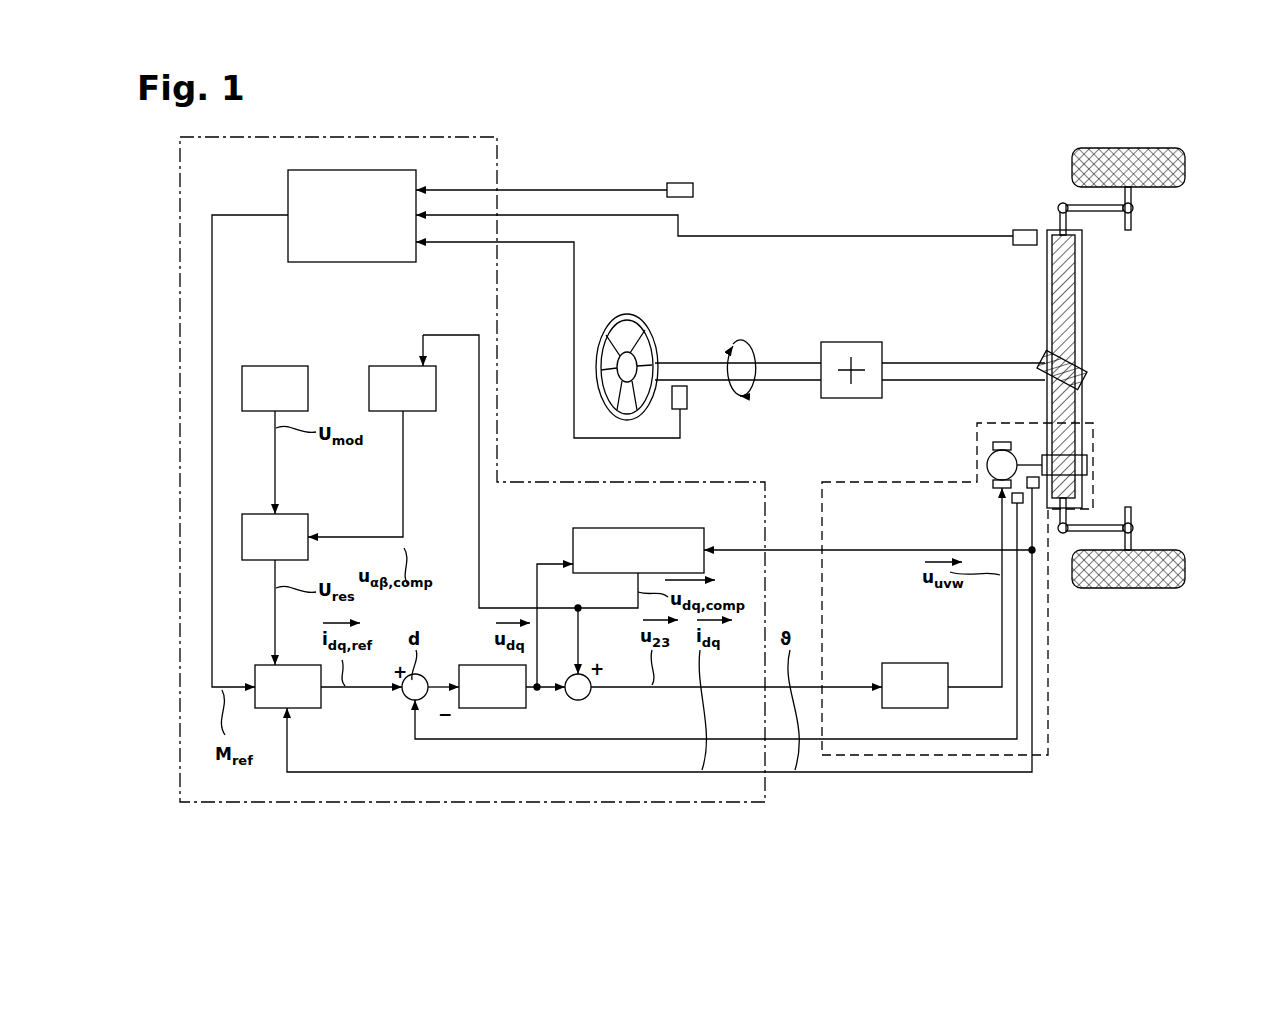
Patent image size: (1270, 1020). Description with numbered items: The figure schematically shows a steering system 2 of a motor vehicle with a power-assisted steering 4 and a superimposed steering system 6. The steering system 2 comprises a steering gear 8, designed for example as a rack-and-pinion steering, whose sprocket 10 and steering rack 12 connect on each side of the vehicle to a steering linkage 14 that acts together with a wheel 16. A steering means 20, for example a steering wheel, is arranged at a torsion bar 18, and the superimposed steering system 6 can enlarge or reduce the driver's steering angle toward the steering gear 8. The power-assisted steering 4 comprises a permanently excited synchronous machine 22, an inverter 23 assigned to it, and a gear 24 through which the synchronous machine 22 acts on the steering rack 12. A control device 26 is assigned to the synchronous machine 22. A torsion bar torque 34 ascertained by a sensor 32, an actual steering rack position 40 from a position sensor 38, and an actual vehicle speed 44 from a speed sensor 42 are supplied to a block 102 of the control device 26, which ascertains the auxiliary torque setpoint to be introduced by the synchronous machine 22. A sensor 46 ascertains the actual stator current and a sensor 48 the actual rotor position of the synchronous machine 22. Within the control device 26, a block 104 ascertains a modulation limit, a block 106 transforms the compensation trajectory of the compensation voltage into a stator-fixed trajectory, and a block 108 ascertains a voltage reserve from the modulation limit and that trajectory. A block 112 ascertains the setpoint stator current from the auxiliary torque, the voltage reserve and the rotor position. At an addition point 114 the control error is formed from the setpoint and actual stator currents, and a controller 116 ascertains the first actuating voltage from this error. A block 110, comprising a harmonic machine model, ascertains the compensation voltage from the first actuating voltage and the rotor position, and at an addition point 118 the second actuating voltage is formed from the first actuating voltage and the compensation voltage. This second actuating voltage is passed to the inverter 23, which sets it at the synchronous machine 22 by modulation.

The steering system 2 is at (800, 180).
The power-assisted steering 4 is at (975, 432).
The superimposed steering system 6 is at (850, 341).
The steering gear 8 is at (1035, 345).
The sprocket 10 is at (1080, 372).
The steering rack 12 is at (1062, 252).
The steering linkage 14 is at (1080, 206).
The wheel 16 is at (1185, 168).
The torsion bar 18 is at (708, 362).
The steering means 20 is at (655, 355).
The permanently excited synchronous machine 22 is at (985, 465).
The inverter 23 is at (932, 662).
The gear 24 is at (1025, 452).
The control device 26 is at (545, 480).
The sensor 32 is at (688, 398).
The torsion bar torque 34 is at (682, 438).
The position sensor 38 is at (1022, 229).
The actual steering rack position 40 is at (922, 234).
The speed sensor 42 is at (678, 182).
The actual vehicle speed 44 is at (566, 188).
The sensor 46 is at (1010, 498).
The sensor 48 is at (1030, 489).
The block 102 is at (338, 264).
The block 104 is at (277, 364).
The block 106 is at (408, 364).
The block 108 is at (300, 515).
The block 110 is at (600, 527).
The block 112 is at (258, 664).
The current summing point 114 is at (406, 700).
The controller 116 is at (475, 664).
The addition point 118 is at (588, 697).